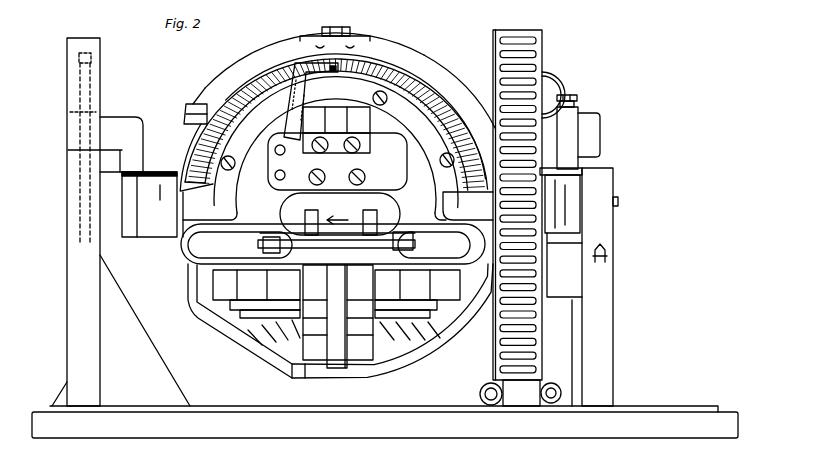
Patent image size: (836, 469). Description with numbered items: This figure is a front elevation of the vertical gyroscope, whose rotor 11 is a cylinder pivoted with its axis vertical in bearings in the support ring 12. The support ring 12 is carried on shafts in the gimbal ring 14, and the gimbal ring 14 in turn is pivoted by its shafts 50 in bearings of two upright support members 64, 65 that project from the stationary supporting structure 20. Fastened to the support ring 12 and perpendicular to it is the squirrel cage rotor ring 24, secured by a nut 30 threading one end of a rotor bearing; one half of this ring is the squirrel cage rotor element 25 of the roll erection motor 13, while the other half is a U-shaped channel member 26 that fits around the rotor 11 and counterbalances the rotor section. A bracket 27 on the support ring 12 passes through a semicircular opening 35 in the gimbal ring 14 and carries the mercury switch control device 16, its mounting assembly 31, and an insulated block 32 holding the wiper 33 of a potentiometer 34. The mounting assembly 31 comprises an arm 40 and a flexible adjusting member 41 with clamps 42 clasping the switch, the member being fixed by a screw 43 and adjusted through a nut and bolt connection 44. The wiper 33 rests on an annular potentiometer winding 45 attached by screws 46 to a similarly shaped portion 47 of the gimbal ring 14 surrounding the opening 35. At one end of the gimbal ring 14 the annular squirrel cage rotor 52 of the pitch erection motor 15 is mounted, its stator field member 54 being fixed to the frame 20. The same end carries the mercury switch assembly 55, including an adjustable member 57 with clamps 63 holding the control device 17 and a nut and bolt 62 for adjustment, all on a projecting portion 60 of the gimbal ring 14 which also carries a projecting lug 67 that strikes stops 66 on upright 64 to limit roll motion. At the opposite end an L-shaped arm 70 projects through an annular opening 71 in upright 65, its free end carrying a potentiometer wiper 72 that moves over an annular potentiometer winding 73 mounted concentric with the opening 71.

The rotor 11 is at (230, 285).
The support ring 12 is at (320, 352).
The roll erection motor 13 is at (462, 65).
The gimbal ring 14 is at (183, 249).
The pitch erection motor 15 is at (492, 366).
The control device 16 is at (386, 210).
The control device 17 is at (555, 89).
The supporting structure 20 is at (695, 406).
The squirrel cage rotor ring 24 is at (404, 36).
The squirrel cage rotor element 25 is at (463, 96).
The U-shaped channel member 26 is at (221, 86).
The bracket 27 is at (331, 135).
The nut 30 is at (316, 29).
The mounting assembly 31 is at (424, 243).
The insulated block 32 is at (398, 170).
The wiper 33 is at (301, 93).
The potentiometer 34 is at (189, 154).
The opening 35 is at (252, 198).
The arm 40 is at (314, 266).
The flexible adjusting member 41 is at (318, 246).
The clamps 42 is at (366, 218).
The screw 43 is at (263, 243).
The nut and bolt connection 44 is at (392, 268).
The potentiometer winding 45 is at (226, 112).
The screws 46 is at (231, 158).
The portion of the gimbal ring 47 is at (205, 120).
The shafts 50 is at (122, 207).
The squirrel cage rotor 52 is at (540, 46).
The stator field member 54 is at (486, 392).
The mercury switch assembly 55 is at (563, 70).
The adjustable member 57 is at (580, 104).
The projecting portion 60 is at (568, 150).
The nut and bolt 62 is at (577, 99).
The clamps 63 is at (572, 96).
The upright support member 64 is at (604, 298).
The upright support member 65 is at (78, 282).
The stops 66 is at (606, 249).
The projecting lug 67 is at (598, 134).
The L-shaped arm 70 is at (118, 128).
The opening 71 is at (80, 112).
The potentiometer wiper 72 is at (74, 88).
The potentiometer winding 73 is at (80, 62).